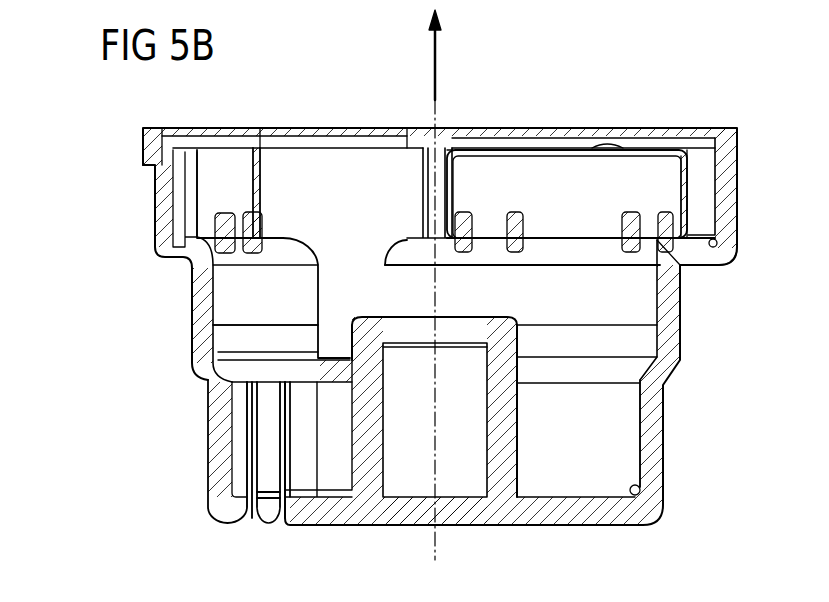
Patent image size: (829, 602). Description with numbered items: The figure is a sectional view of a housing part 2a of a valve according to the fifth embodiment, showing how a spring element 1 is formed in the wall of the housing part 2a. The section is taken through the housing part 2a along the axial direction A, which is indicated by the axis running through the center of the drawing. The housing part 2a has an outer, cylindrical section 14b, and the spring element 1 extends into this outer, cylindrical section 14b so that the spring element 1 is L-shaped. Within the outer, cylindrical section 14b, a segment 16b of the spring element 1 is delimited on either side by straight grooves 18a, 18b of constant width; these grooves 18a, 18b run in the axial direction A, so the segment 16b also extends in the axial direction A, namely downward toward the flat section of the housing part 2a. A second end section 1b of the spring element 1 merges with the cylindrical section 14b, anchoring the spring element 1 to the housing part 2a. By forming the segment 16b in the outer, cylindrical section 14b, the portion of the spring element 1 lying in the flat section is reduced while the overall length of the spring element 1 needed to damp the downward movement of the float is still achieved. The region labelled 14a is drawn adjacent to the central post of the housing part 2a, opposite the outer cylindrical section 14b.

The axial direction A is at (432, 66).
The housing part 2a is at (653, 93).
The spring element 1 is at (265, 472).
The second end section 1b is at (268, 395).
The inner wall of central post 14a is at (495, 440).
The outer cylindrical section 14b is at (647, 432).
The segment 16b is at (265, 457).
The groove 18a is at (253, 412).
The groove 18b is at (287, 440).